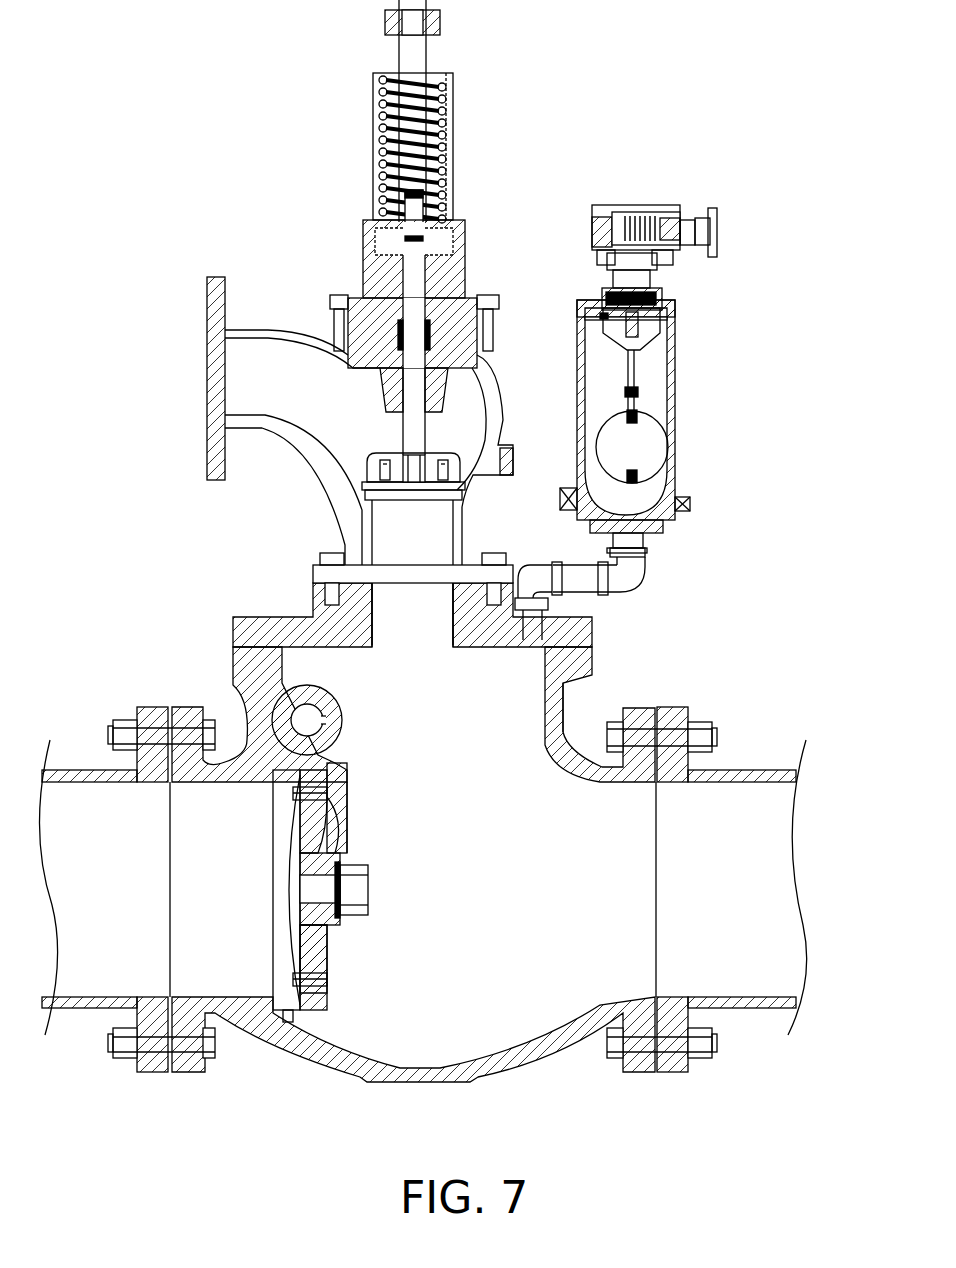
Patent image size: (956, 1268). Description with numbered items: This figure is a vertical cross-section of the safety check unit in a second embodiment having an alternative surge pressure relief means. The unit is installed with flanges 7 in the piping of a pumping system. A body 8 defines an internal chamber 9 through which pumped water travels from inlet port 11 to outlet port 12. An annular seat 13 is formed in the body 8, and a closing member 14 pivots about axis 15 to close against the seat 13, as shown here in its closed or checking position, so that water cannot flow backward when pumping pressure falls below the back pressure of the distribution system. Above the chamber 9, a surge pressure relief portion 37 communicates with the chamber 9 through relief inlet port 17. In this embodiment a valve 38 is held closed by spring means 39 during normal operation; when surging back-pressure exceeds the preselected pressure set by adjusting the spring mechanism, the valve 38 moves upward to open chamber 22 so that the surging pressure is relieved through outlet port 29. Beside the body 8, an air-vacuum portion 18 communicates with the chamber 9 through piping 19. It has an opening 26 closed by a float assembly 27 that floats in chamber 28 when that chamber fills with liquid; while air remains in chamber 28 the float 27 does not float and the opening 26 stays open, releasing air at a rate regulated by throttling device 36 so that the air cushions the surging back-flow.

The flanges 7 is at (160, 1075).
The body 8 is at (602, 700).
The internal chamber 9 is at (433, 883).
The inlet port 11 is at (220, 893).
The outlet port 12 is at (642, 863).
The annular seat 13 is at (278, 1018).
The closing member 14 is at (330, 920).
The axis 15 is at (300, 718).
The relief inlet port 17 is at (452, 698).
The air-vacuum portion 18 is at (705, 410).
The piping 19 is at (615, 570).
The channel 22 is at (421, 633).
The opening 26 is at (665, 295).
The float assembly 27 is at (640, 453).
The chamber 28 is at (650, 368).
The outlet port 29 is at (268, 410).
The throttling device 36 is at (630, 205).
The surge pressure relief portion 37 is at (243, 210).
The valve 38 is at (440, 440).
The spring means 39 is at (481, 128).